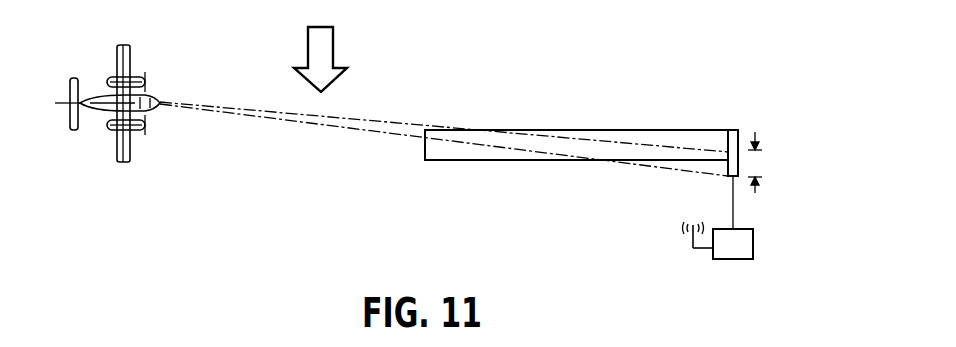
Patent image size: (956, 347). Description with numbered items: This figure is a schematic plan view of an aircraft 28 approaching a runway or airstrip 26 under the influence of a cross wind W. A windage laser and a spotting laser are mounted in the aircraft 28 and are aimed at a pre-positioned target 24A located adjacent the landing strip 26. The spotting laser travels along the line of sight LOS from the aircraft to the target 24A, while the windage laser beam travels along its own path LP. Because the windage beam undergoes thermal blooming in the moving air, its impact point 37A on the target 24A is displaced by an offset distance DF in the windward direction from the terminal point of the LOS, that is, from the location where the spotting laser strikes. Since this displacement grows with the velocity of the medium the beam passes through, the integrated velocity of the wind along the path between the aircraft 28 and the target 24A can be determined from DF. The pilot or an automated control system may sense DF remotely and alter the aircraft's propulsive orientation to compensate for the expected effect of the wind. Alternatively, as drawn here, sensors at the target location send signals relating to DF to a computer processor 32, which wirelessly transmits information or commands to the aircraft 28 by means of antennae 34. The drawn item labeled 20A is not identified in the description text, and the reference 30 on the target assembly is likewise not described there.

The aircraft target 20A is at (128, 103).
The aircraft 28 is at (100, 111).
The airstrip 26 is at (532, 161).
The mirror 30 is at (738, 133).
The impact point 37A is at (728, 142).
The target 24A is at (728, 178).
The computer processor 32 is at (737, 260).
The antennae 34 is at (691, 246).
The cross wind W is at (333, 42).
The line of sight LOS is at (333, 126).
The path of the windage laser beam LP is at (636, 143).
The offset distance DF is at (756, 176).